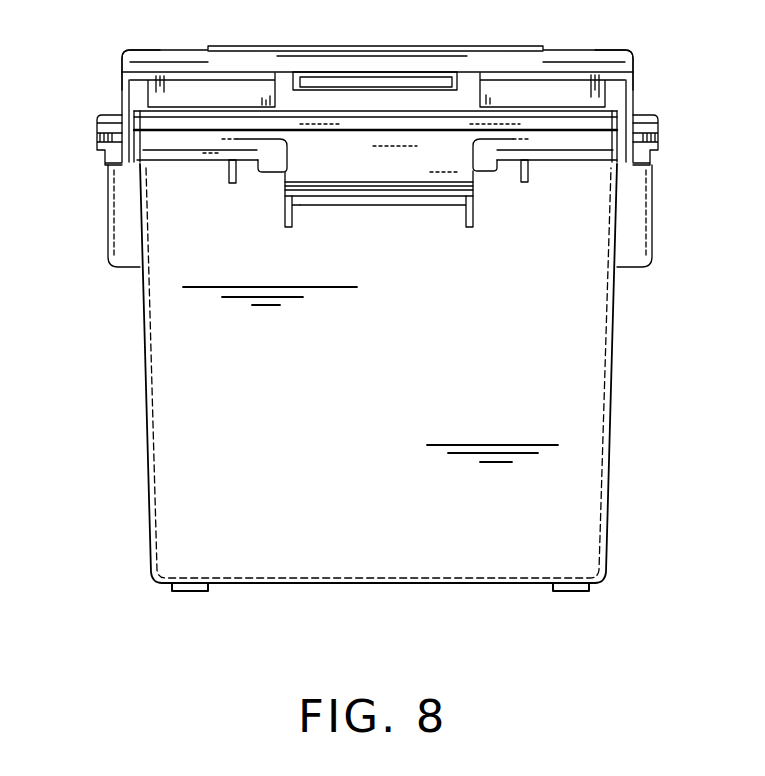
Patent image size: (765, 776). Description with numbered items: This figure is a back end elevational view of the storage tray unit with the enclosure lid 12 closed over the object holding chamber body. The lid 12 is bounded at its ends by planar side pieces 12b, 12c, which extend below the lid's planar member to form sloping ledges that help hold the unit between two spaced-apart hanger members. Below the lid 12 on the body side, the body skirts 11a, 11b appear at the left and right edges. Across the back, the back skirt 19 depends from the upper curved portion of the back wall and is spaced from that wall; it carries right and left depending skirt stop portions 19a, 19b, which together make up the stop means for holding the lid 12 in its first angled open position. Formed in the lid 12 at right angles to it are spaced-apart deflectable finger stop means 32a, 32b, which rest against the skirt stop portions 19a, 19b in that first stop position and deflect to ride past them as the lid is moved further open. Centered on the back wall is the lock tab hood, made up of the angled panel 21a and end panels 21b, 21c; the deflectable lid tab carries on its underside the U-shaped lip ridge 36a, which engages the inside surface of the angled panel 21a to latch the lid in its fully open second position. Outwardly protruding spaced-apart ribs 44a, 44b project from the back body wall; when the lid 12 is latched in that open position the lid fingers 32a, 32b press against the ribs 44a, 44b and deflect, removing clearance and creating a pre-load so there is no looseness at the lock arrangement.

The enclosure lid 12 is at (343, 47).
The lid side piece 12b is at (121, 84).
The lid side piece 12c is at (633, 76).
The deflectable finger stop means 32b is at (253, 102).
The deflectable finger stop means 32a is at (556, 102).
The U-shaped lip ridge 36a is at (412, 85).
The back skirt 19 is at (181, 171).
The skirt stop portion 19a is at (485, 160).
The skirt stop portion 19b is at (273, 163).
The outwardly protruding rib 44a is at (230, 168).
The outwardly protruding rib 44b is at (528, 172).
The angled panel 21a is at (398, 179).
The end panel 21b is at (478, 197).
The end panel 21c is at (286, 198).
The body skirt 11a is at (107, 218).
The body skirt 11b is at (667, 196).